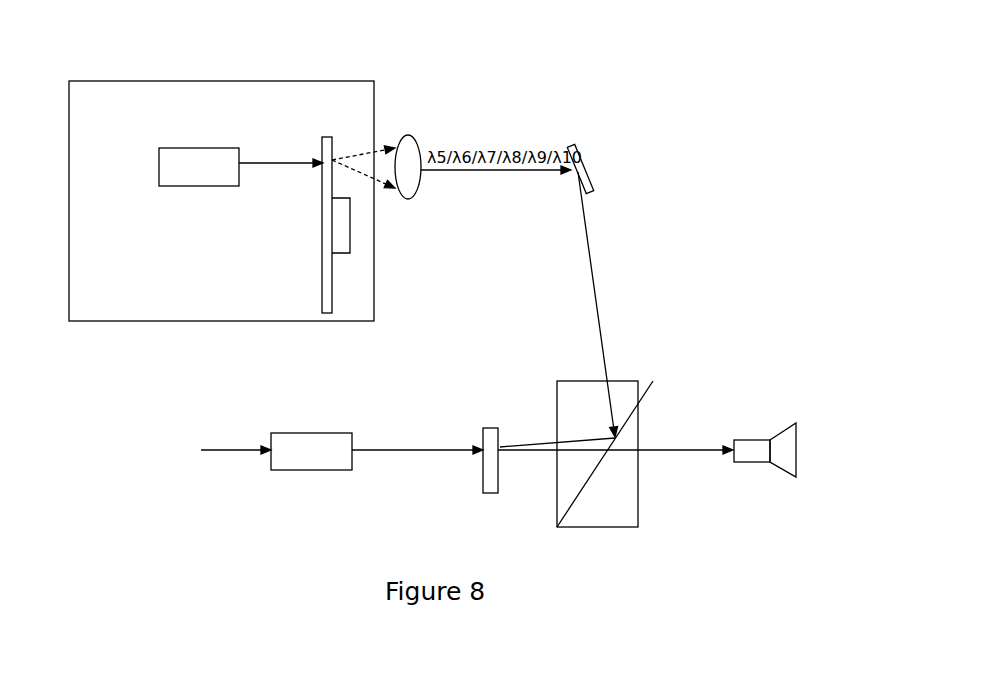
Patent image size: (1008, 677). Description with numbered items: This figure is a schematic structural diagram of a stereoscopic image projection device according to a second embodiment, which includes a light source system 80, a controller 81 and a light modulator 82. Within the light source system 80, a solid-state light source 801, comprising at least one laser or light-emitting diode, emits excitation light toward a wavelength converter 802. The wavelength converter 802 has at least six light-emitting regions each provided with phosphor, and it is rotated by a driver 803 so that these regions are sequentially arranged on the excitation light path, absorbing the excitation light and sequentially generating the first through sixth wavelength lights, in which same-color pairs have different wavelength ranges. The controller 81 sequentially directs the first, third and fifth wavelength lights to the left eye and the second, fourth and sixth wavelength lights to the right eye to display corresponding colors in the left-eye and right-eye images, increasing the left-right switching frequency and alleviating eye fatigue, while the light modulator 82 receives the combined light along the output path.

The light source system 80 is at (199, 83).
The solid-state light source 801 is at (160, 157).
The wavelength converter 802 is at (323, 145).
The driver 803 is at (342, 245).
The controller 81 is at (278, 438).
The light modulator 82 is at (487, 487).